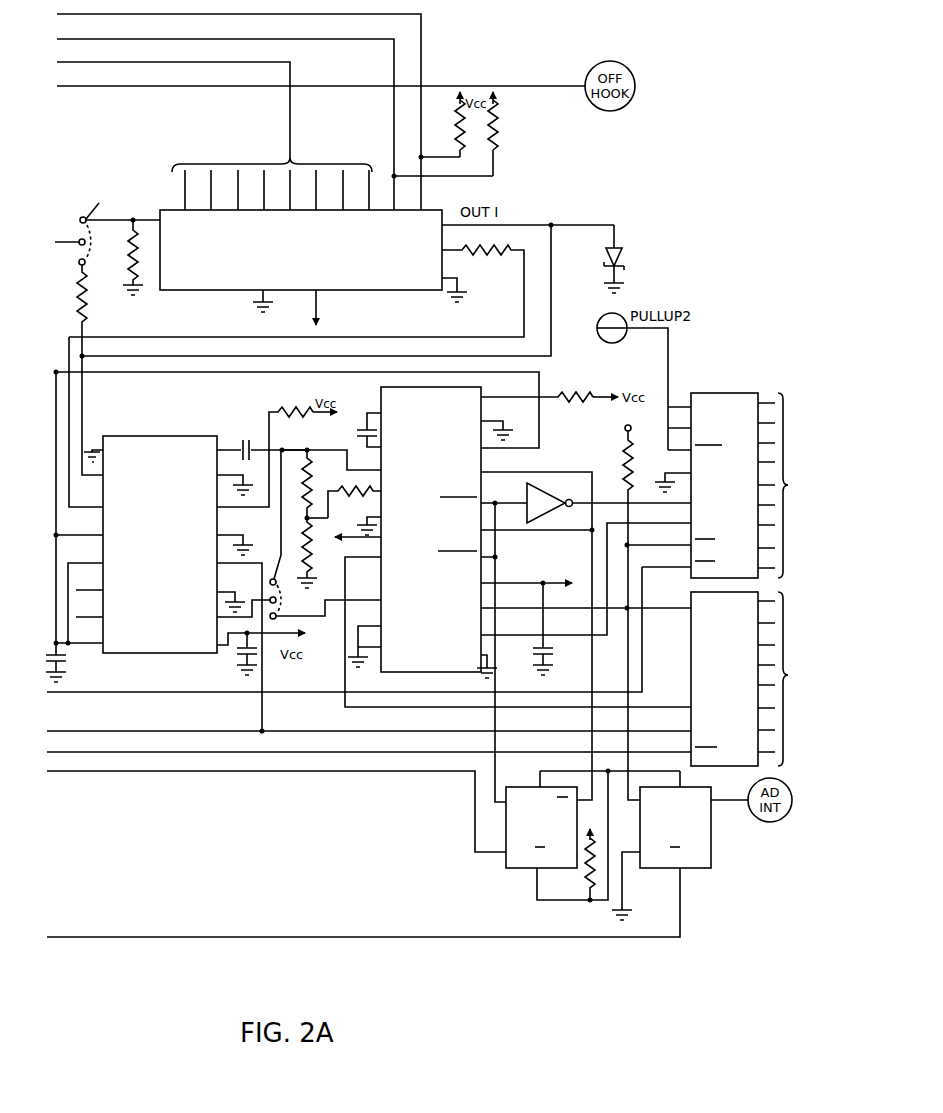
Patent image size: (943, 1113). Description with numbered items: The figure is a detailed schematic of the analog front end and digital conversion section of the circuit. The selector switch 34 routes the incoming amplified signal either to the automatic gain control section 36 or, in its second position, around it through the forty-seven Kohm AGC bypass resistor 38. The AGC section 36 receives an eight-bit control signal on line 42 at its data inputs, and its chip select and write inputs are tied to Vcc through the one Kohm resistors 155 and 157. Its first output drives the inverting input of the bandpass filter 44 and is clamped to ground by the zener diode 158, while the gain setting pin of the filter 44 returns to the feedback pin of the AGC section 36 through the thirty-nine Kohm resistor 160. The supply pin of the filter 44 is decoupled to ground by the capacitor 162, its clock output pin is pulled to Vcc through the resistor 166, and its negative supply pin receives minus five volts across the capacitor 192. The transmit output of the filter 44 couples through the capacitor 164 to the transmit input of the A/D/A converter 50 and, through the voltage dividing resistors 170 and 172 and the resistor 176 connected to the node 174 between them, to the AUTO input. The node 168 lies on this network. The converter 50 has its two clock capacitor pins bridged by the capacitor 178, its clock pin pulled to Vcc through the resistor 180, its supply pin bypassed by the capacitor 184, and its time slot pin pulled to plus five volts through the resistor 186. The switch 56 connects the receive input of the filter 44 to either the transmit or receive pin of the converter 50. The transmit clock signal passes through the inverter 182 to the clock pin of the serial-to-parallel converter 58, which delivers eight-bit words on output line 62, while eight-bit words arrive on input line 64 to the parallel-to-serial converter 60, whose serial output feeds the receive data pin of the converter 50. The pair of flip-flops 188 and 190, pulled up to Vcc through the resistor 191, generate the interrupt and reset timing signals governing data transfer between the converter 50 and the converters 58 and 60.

The selector switch 34 is at (111, 199).
The automatic gain control section 36 is at (226, 291).
The AGC bypass resistor 38 is at (86, 300).
The control signal line 42 is at (230, 158).
The bandpass filter 44 is at (148, 654).
The analog-to-digital/digital-to-analog converter 50 is at (400, 673).
The switch 56 is at (287, 604).
The serial-to-parallel converter 58 is at (732, 392).
The parallel-to-serial converter 60 is at (690, 653).
The output line 62 is at (815, 487).
The input line 64 is at (815, 677).
The resistor 155 is at (500, 136).
The resistor 157 is at (455, 128).
The zener diode 158 is at (619, 251).
The resistor 160 is at (468, 262).
The capacitor 162 is at (240, 660).
The capacitor 164 is at (244, 438).
The resistor 166 is at (270, 408).
The node 168 is at (279, 448).
The voltage dividing resistor 170 is at (307, 463).
The voltage dividing resistor 172 is at (311, 548).
The node 174 is at (305, 520).
The resistor 176 is at (358, 484).
The capacitor 178 is at (362, 426).
The resistor 180 is at (582, 391).
The inverter 182 is at (568, 472).
The capacitor 184 is at (538, 656).
The resistor 186 is at (624, 467).
The flip-flop 188 is at (712, 858).
The flip-flop 190 is at (507, 866).
The resistor 191 is at (585, 864).
The capacitor 192 is at (62, 661).